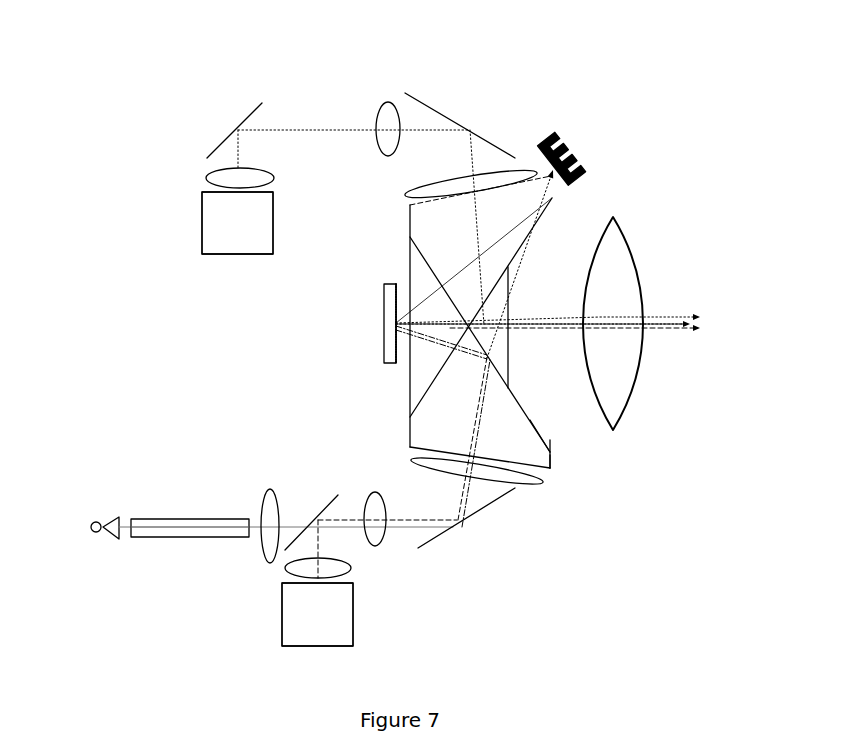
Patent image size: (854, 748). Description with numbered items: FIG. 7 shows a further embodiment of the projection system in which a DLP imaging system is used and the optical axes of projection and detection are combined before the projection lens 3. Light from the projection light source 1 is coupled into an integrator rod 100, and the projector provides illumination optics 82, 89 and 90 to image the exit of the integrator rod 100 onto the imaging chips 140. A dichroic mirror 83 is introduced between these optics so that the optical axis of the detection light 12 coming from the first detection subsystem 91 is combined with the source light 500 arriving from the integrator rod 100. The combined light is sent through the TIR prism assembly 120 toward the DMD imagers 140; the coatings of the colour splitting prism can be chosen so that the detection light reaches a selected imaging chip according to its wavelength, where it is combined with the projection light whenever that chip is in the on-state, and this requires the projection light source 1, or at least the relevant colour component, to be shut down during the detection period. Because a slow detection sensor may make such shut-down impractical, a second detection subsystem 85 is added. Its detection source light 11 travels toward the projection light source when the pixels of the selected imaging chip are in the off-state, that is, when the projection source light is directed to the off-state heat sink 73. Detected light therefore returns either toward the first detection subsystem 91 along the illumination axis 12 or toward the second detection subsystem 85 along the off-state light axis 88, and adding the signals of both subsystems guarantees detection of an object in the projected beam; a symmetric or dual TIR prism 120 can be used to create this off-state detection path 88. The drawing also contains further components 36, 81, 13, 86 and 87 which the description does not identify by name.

The projection light source 1 is at (112, 515).
The integrator rod 100 is at (198, 518).
The illumination optics 82 is at (265, 490).
The dichroic mirror 83 is at (332, 490).
The illumination optics 89 is at (372, 545).
The detector 36 is at (277, 407).
The first detection subsystem 91 is at (345, 632).
The second detection subsystem 85 is at (200, 218).
The source light 500 is at (412, 527).
The illumination optics 90 is at (540, 485).
The beam splitter cube 81 is at (410, 430).
The TIR prism assembly 120 is at (527, 432).
The DMD imagers 140 is at (383, 293).
The light beam 13 is at (692, 313).
The detection source light 11 is at (645, 331).
The detection light 12 is at (692, 328).
The projection lens 3 is at (615, 432).
The mirror 86 is at (413, 90).
The off-state light axis 88 is at (323, 128).
The mirror 87 is at (248, 107).
The off-state heat sink 73 is at (580, 183).